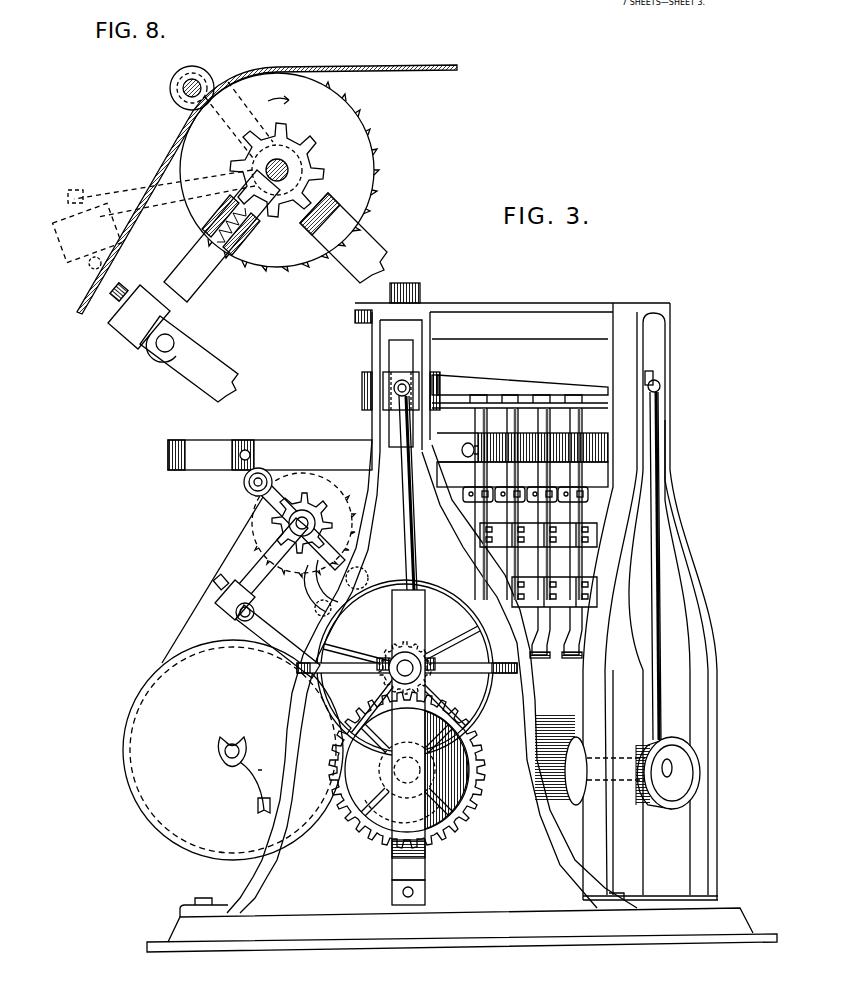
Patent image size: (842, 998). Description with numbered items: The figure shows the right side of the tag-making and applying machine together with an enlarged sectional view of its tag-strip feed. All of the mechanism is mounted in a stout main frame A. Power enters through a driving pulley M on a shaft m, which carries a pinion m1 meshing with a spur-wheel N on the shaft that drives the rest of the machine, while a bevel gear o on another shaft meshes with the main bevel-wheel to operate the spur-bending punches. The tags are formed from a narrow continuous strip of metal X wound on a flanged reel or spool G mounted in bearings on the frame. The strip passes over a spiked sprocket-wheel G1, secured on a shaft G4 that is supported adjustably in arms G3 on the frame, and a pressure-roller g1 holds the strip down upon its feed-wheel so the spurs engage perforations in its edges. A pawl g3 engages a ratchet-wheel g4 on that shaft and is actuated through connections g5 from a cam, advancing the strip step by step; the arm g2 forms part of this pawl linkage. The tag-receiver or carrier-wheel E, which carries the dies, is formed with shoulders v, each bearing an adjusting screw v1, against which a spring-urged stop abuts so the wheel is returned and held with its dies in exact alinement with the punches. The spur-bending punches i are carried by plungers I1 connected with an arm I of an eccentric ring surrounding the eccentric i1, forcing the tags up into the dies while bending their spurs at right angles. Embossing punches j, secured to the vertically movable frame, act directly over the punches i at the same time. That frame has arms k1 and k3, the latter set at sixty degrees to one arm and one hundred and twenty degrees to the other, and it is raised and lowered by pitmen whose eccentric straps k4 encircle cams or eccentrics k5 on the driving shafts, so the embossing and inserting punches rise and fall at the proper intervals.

In FIG. 3, the main frame A is at (462, 627).
In FIG. 3, the tag-receiver or carrier-wheel E is at (270, 455).
In FIG. 3, the flanged reel or spool G is at (233, 750).
In FIG. 8, the spiked or sprocket-wheel G1 is at (279, 172).
In FIG. 3, the spiked or sprocket-wheel G1 is at (303, 525).
In FIG. 8, the arms G3 is at (343, 238).
In FIG. 3, the arms G3 is at (333, 556).
In FIG. 8, the shaft G4 is at (268, 168).
In FIG. 3, the shaft G4 is at (296, 524).
In FIG. 8, the pressure-roller or bearing-wheel g1 is at (178, 92).
In FIG. 3, the pressure-roller or bearing-wheel g1 is at (248, 486).
In FIG. 8, the pawl arm g2 is at (187, 268).
In FIG. 3, the pawl arm g2 is at (257, 578).
In FIG. 8, the pawl g3 is at (262, 265).
In FIG. 8, the ratchet-wheel g4 is at (300, 143).
In FIG. 8, the connections g5 is at (187, 377).
In FIG. 3, the connections g5 is at (312, 645).
In FIG. 8, the tag strip X is at (80, 300).
In FIG. 3, the tag strip X is at (200, 600).
In FIG. 3, the arm I is at (556, 650).
In FIG. 3, the plungers I1 is at (480, 510).
In FIG. 3, the punches i is at (584, 480).
In FIG. 3, the eccentric or cam i1 is at (577, 805).
In FIG. 3, the embossing punches j is at (589, 420).
In FIG. 3, the arm of frame K k1 is at (655, 614).
In FIG. 3, the arm of frame K k3 is at (499, 345).
In FIG. 3, the eccentric strap k4 is at (435, 832).
In FIG. 3, the cam or eccentric k5 is at (448, 773).
In FIG. 3, the driving pulley M is at (438, 600).
In FIG. 3, the pinion m1 is at (396, 650).
In FIG. 3, the shaft m is at (425, 680).
In FIG. 3, the spur-wheel N is at (477, 768).
In FIG. 3, the bevel gear o is at (622, 767).
In FIG. 3, the shoulder or off-set v is at (485, 443).
In FIG. 3, the adjusting screw v1 is at (462, 450).